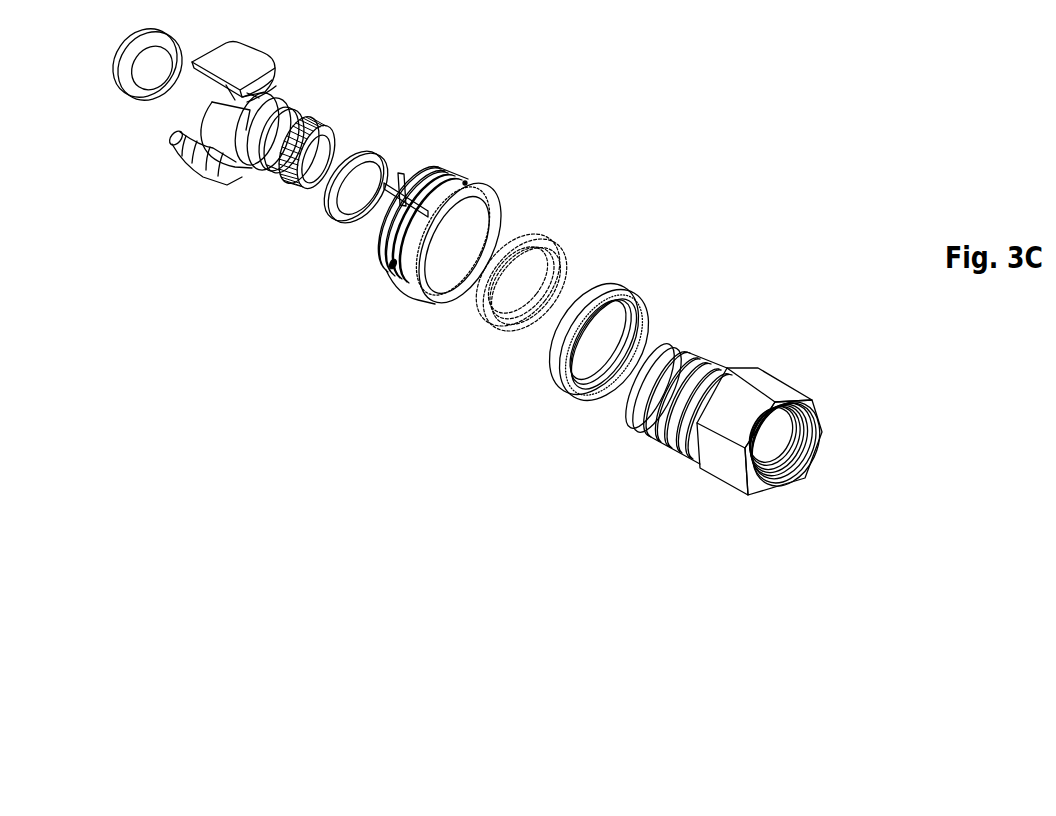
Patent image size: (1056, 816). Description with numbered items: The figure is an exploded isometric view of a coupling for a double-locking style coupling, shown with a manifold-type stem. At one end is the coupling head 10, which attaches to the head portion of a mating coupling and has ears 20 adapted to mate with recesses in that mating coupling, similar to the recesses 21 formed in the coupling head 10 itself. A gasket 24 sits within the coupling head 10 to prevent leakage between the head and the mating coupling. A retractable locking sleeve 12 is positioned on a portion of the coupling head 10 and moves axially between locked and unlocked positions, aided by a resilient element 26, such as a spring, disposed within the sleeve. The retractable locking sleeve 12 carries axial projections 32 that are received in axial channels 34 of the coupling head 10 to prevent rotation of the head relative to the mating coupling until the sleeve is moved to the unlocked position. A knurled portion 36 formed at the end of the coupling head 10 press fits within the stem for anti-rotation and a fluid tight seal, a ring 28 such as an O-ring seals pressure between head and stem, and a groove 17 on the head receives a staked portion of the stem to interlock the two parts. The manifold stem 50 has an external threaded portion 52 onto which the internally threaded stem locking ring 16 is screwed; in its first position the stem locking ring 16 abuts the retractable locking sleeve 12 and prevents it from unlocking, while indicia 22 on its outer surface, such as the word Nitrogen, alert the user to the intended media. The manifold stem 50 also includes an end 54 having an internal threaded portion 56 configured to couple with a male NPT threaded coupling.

The coupling head 10 is at (623, 124).
The retractable locking sleeve 12 is at (495, 188).
The stem locking ring 16 is at (590, 329).
The groove 17 is at (277, 157).
The ears 20 is at (263, 156).
The recesses 21 is at (193, 157).
The indicia 22 is at (556, 368).
The gasket 24 is at (118, 77).
The resilient element 26 is at (567, 253).
The ring 28 is at (350, 212).
The axial projections 32 is at (465, 183).
The axial channels 34 is at (267, 85).
The knurled portion 36 is at (332, 129).
The manifold stem 50 is at (802, 263).
The threaded portion 52 is at (717, 355).
The end 54 is at (725, 463).
The internal threaded portion 56 is at (785, 453).